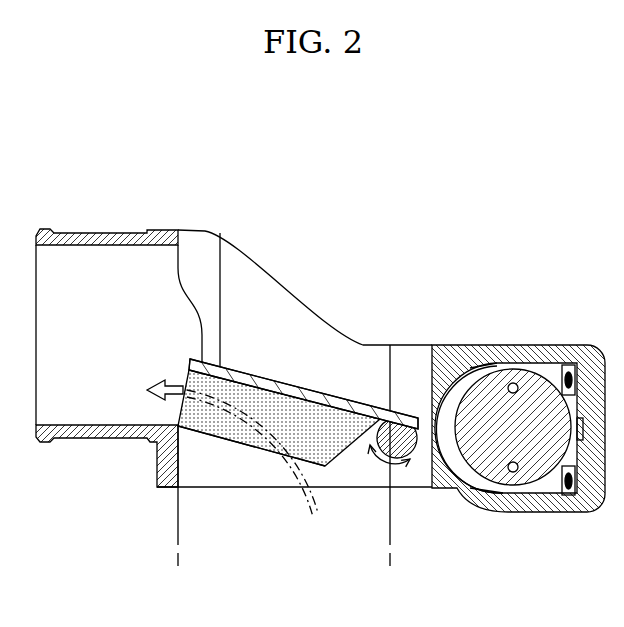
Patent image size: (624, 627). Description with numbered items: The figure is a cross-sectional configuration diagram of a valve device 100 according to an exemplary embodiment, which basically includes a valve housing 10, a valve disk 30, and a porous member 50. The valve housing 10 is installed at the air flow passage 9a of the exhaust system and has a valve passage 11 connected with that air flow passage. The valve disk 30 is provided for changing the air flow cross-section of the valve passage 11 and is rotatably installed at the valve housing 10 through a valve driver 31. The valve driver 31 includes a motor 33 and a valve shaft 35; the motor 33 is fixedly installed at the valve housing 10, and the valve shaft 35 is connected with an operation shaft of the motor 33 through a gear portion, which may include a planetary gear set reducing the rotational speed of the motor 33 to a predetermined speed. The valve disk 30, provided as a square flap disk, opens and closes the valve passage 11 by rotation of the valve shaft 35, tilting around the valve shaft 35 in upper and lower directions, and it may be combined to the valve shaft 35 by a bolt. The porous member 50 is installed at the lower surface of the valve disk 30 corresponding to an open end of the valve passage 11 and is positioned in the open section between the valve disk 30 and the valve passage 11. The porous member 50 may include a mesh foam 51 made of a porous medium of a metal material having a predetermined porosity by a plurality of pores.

The valve device 100 is at (317, 182).
The valve housing 10 is at (78, 441).
The air flow passage 9a is at (178, 517).
The valve passage 11 is at (283, 488).
The valve disk 30 is at (298, 390).
The valve driver 31 is at (524, 343).
The motor 33 is at (538, 462).
The valve shaft 35 is at (418, 432).
The porous member 50 is at (348, 458).
The mesh foam 51 is at (233, 442).